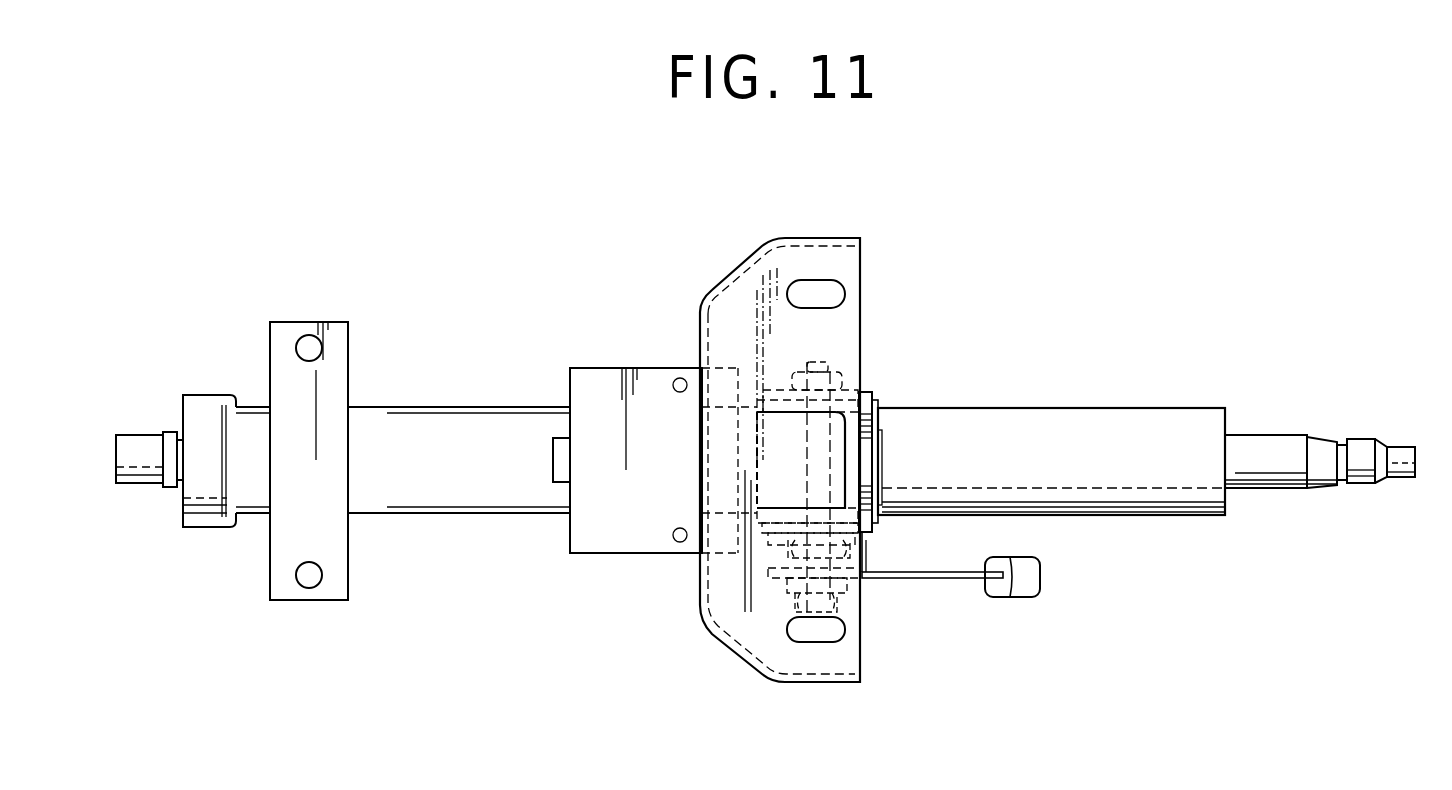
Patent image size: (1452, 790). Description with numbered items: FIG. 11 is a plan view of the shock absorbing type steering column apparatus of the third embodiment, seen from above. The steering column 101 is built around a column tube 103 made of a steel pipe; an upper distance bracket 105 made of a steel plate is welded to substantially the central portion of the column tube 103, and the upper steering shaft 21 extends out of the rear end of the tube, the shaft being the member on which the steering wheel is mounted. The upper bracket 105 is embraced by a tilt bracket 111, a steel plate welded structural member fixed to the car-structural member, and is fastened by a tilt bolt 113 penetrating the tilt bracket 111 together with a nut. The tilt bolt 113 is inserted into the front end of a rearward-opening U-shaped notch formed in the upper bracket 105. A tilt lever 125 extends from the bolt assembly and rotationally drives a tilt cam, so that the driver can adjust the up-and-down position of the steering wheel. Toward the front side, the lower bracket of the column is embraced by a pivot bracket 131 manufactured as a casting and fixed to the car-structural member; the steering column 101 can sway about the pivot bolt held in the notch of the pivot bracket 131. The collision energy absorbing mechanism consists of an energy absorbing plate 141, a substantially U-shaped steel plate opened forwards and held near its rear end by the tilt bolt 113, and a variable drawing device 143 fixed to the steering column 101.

The upper steering shaft 21 is at (1277, 448).
The steering column 101 is at (1146, 421).
The column tube 103 is at (1067, 417).
The upper distance bracket 105 is at (878, 420).
The tilt bracket 111 is at (843, 322).
The tilt bolt 113 is at (840, 605).
The tilt lever 125 is at (940, 582).
The pivot bracket 131 is at (283, 371).
The energy absorbing plate 141 is at (878, 455).
The variable drawing device 143 is at (636, 364).